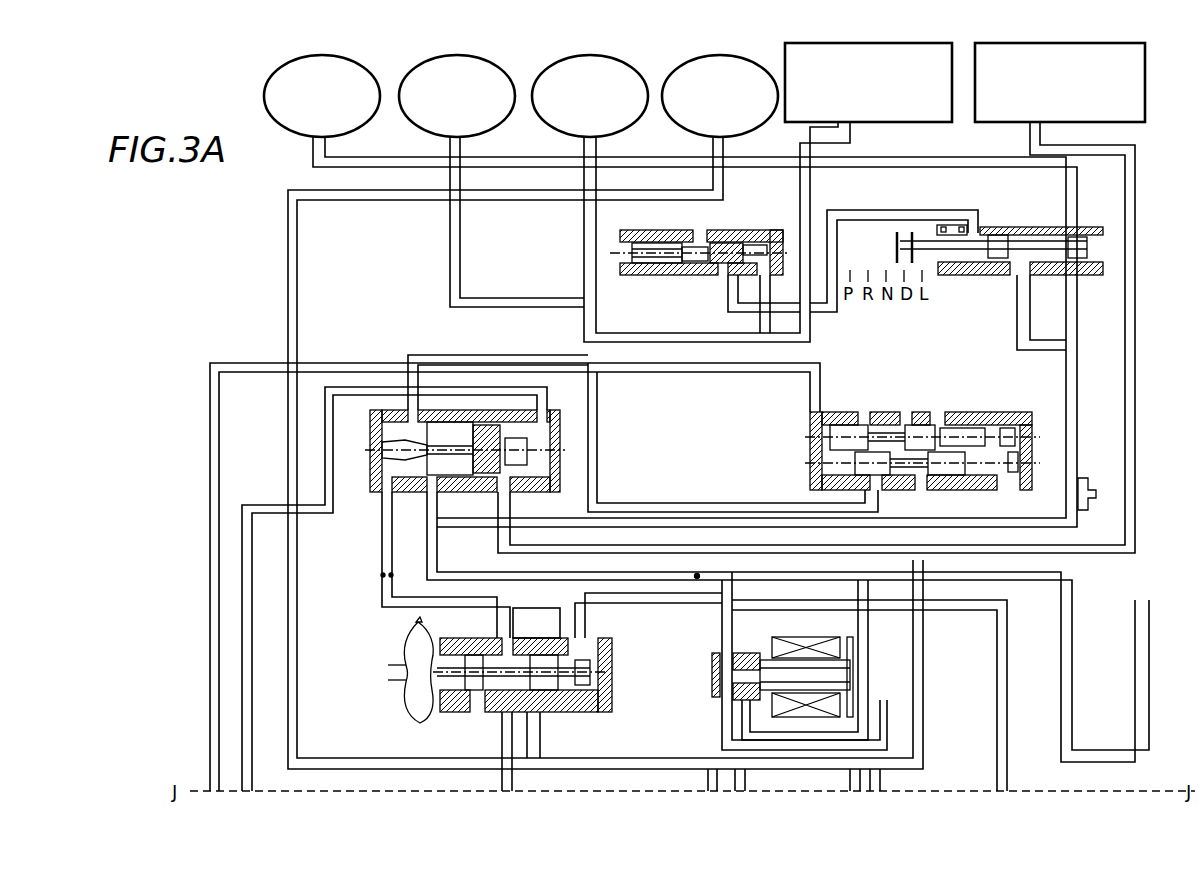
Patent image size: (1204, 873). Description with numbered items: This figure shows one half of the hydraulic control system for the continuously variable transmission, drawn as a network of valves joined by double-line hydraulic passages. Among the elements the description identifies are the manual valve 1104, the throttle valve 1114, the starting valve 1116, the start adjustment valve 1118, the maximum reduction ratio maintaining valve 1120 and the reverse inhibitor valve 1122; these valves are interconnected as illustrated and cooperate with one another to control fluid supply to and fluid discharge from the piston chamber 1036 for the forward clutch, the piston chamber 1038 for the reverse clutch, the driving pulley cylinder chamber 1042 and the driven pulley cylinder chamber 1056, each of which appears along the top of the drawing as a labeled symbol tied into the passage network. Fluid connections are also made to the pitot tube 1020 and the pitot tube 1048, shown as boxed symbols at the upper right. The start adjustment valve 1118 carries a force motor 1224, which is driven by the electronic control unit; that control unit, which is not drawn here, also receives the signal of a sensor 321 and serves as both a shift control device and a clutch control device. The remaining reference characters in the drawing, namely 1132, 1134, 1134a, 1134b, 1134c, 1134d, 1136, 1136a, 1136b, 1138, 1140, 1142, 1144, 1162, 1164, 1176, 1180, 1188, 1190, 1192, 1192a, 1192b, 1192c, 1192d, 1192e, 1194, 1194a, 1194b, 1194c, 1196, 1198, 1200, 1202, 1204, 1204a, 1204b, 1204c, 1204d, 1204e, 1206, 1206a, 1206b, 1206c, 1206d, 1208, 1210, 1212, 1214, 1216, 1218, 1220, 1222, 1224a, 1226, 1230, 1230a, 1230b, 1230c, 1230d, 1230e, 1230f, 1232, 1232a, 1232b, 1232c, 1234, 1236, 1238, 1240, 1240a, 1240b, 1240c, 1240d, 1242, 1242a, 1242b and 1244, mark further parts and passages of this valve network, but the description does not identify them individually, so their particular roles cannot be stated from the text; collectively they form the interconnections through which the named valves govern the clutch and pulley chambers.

The piston chamber for the forward clutch 1036 is at (373, 127).
The piston chamber for the reverse clutch 1038 is at (508, 127).
The driving pulley cylinder chamber 1042 is at (641, 127).
The driven pulley cylinder chamber 1056 is at (768, 127).
The pitot tube 1048 is at (905, 123).
The pitot tube 1020 is at (1145, 108).
The manual valve 1104 is at (1040, 218).
The throttle valve 1114 is at (408, 626).
The starting valve 1116 is at (365, 492).
The start adjustment valve 1118 is at (798, 660).
The maximum reduction ratio maintaining valve 1120 is at (805, 437).
The reverse inhibitor valve 1122 is at (800, 208).
The line 1132 is at (370, 202).
The manual valve body 1134 is at (1035, 254).
The port 1134a is at (950, 276).
The port 1134b is at (968, 276).
The port 1134c is at (1025, 285).
The port 1134d is at (1075, 277).
The manual valve spool 1136 is at (932, 240).
The land 1136a is at (998, 234).
The land 1136b is at (1078, 236).
The line 1138 is at (905, 210).
The line 1140 is at (486, 566).
The forward clutch line 1142 is at (978, 162).
The reverse clutch line 1144 is at (492, 297).
The drain 1162 is at (594, 655).
The drain 1164 is at (648, 736).
The line 1176 is at (926, 668).
The line 1180 is at (582, 232).
The line 1188 is at (209, 452).
The line 1190 is at (253, 504).
The valve body 1192 is at (691, 686).
The port 1192a is at (455, 700).
The port 1192b is at (490, 712).
The port 1192c is at (535, 712).
The port 1192d is at (570, 712).
The port 1192e is at (590, 685).
The valve spool 1194 is at (560, 672).
The land 1194a is at (473, 656).
The land 1194b is at (570, 640).
The land 1194c is at (582, 660).
The diaphragm 1196 is at (420, 706).
The chamber 1198 is at (405, 702).
The line 1200 is at (706, 503).
The line 1202 is at (582, 592).
The valve body 1204 is at (676, 438).
The plunger 1204a is at (380, 458).
The port 1204b is at (400, 492).
The port 1204c is at (470, 490).
The port 1204d is at (540, 484).
The port 1204e is at (540, 470).
The valve spool 1206 is at (527, 450).
The land 1206a is at (405, 412).
The land 1206b is at (450, 422).
The land 1206c is at (594, 366).
The land 1206d is at (488, 425).
The line 1208 is at (414, 352).
The orifice 1210 is at (380, 576).
The line 1212 is at (735, 594).
The engine pitot line 1214 is at (1140, 140).
The port 1216 is at (432, 515).
The port 1218 is at (500, 515).
The spring 1220 is at (548, 412).
The line 1222 is at (712, 690).
The force motor 1224 is at (798, 640).
The armature 1224a is at (752, 660).
The orifice 1226 is at (697, 578).
The valve spool 1230 is at (820, 458).
The land 1230a is at (826, 412).
The land 1230b is at (830, 425).
The land 1230c is at (878, 412).
The land 1230d is at (908, 412).
The land 1230e is at (945, 412).
The land 1230f is at (1005, 432).
The valve spool 1232 is at (1018, 460).
The land 1232a is at (882, 478).
The land 1232b is at (950, 475).
The land 1232c is at (1012, 472).
The spring 1234 is at (945, 430).
The port 1236 is at (820, 412).
The port 1238 is at (932, 412).
The valve body 1240 is at (709, 253).
The port 1240a is at (694, 230).
The port 1240b is at (780, 198).
The port 1240c is at (782, 236).
The port 1240d is at (780, 232).
The valve spool 1242 is at (630, 270).
The land 1242a is at (692, 265).
The land 1242b is at (732, 285).
The spring 1244 is at (650, 280).
The sensor 321 is at (1094, 510).